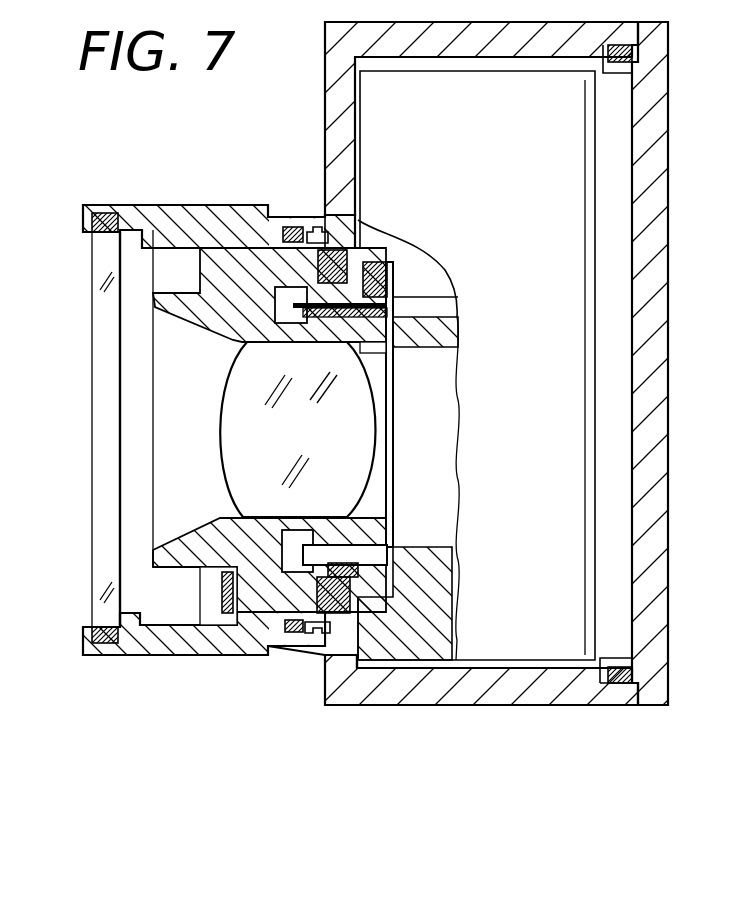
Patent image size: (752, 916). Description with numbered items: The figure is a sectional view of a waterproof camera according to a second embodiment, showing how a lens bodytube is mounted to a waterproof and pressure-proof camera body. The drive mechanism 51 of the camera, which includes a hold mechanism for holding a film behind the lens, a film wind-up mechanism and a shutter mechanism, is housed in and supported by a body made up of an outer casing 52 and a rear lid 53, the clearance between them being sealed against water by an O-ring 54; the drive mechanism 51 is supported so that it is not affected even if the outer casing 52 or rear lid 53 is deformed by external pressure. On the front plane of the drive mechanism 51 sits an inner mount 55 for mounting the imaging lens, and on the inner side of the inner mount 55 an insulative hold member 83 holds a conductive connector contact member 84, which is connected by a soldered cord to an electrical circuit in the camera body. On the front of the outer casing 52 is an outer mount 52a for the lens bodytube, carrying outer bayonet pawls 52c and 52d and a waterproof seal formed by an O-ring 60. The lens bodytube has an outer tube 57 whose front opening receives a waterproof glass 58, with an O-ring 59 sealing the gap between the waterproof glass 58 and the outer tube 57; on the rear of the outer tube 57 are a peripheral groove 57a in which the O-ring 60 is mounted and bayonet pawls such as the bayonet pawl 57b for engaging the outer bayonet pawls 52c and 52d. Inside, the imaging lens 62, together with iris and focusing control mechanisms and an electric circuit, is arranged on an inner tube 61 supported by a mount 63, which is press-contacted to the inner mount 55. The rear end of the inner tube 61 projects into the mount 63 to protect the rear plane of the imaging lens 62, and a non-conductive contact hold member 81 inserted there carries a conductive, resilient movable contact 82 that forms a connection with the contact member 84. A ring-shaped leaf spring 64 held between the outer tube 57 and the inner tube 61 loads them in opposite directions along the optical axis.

The drive mechanism 51 is at (540, 645).
The outer casing 52 is at (433, 690).
The outer mount 52a is at (323, 657).
The outer bayonet pawl 52c is at (313, 227).
The outer bayonet pawl 52d is at (312, 633).
The rear lid 53 is at (650, 690).
The seal 54 is at (620, 688).
The inner mount 55 is at (345, 598).
The outer tube 57 is at (133, 637).
The peripheral groove 57a is at (300, 262).
The bayonet pawl 57b is at (326, 208).
The waterproof glass 58 is at (105, 332).
The O-ring 59 is at (100, 240).
The O-ring 60 is at (290, 227).
The inner tube 61 is at (183, 303).
The imaging lens 62 is at (242, 388).
The mount 63 is at (333, 630).
The ring-shaped leaf spring 64 is at (232, 618).
The contact hold member 81 is at (373, 347).
The movable contact 82 is at (385, 300).
The insulative hold member 83 is at (376, 262).
The connector contact member 84 is at (403, 240).